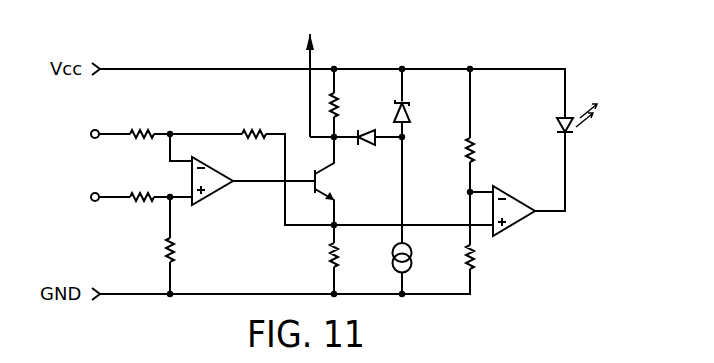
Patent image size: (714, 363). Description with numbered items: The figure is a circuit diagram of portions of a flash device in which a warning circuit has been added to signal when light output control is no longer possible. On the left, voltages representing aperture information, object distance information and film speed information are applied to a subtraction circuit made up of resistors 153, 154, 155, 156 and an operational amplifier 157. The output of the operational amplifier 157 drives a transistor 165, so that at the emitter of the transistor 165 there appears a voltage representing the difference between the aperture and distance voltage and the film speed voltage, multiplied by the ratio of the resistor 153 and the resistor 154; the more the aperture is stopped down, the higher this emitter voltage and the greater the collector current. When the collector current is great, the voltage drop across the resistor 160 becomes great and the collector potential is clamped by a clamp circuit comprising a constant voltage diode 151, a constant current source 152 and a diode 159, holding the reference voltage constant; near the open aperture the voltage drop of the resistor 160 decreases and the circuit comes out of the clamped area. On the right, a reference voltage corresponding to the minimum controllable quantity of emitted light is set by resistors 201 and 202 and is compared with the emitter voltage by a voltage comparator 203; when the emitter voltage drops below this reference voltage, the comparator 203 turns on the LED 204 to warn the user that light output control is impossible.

The constant voltage diode 151 is at (409, 114).
The constant current source 152 is at (412, 264).
The resistor 153 is at (148, 129).
The resistor 154 is at (251, 120).
The resistor 155 is at (141, 206).
The resistor 156 is at (177, 257).
The operational amplifier 157 is at (221, 197).
The diode 159 is at (372, 147).
The resistor 160 is at (340, 107).
The transistor 165 is at (326, 185).
The resistor 201 is at (476, 149).
The resistor 202 is at (478, 260).
The voltage comparator 203 is at (522, 224).
The LED 204 is at (572, 134).